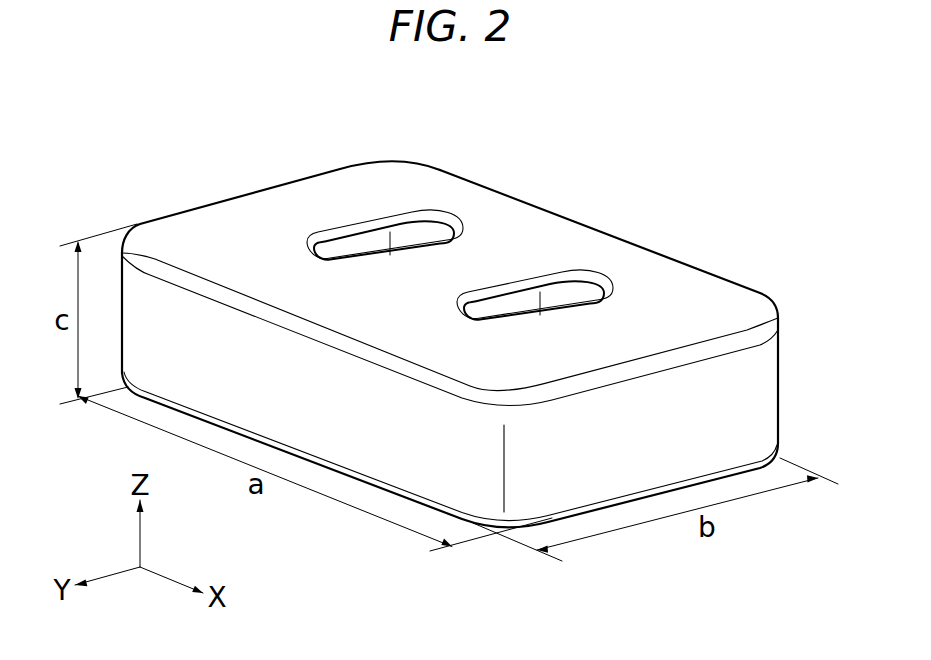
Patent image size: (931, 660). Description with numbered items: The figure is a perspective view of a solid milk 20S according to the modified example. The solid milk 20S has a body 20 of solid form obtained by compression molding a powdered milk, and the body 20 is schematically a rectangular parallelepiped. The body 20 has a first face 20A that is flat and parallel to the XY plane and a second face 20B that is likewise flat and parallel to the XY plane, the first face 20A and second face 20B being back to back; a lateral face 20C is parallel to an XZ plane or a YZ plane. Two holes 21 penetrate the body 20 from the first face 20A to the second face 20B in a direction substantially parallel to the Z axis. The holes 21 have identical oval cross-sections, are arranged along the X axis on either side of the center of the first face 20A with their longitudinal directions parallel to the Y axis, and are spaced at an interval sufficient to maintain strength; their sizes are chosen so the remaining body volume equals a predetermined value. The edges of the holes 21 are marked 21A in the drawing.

The body 20 is at (757, 300).
The solid milk 20S is at (650, 124).
The first face 20A is at (731, 300).
The second face 20B is at (740, 476).
The lateral face 20C is at (758, 399).
The holes 21 is at (428, 235).
The chamfered portion 21A is at (403, 220).